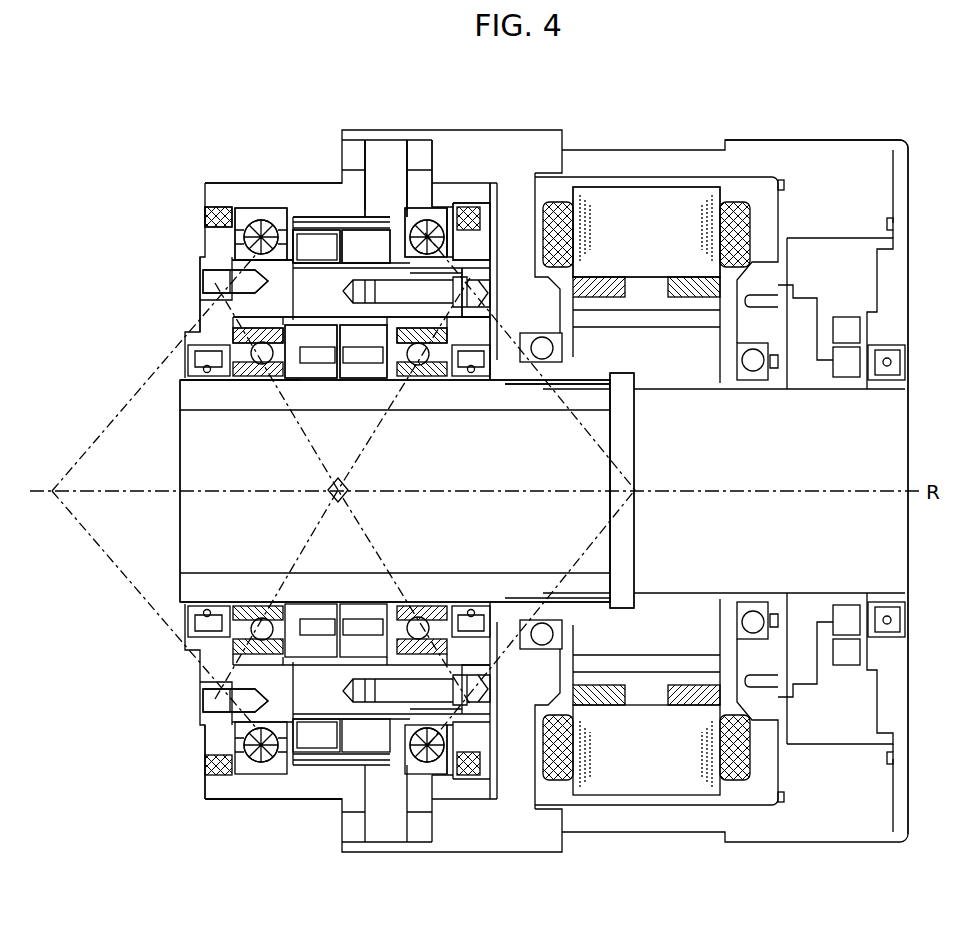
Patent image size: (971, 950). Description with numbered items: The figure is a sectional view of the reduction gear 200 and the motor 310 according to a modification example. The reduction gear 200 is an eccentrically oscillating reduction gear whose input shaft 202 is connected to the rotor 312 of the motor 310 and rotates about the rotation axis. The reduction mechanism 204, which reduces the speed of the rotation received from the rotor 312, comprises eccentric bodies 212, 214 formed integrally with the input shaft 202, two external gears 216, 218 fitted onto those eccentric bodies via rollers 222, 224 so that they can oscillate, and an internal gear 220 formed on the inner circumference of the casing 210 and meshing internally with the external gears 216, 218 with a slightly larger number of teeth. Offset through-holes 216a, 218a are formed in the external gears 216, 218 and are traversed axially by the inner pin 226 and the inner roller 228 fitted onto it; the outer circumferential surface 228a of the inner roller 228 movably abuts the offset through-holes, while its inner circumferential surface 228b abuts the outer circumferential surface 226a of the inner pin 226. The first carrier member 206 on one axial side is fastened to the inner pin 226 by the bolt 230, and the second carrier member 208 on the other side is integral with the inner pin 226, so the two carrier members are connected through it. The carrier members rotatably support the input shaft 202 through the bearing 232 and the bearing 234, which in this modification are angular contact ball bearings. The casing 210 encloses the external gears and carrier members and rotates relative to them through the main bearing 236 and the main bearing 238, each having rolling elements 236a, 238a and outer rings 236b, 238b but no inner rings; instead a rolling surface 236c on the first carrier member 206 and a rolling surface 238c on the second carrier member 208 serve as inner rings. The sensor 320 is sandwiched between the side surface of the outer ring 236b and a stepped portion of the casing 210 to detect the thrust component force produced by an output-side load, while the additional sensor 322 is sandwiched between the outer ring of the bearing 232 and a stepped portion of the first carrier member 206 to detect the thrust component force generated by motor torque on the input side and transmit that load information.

The reduction gear 200 is at (296, 863).
The input shaft 202 is at (245, 412).
The reduction mechanism 204 is at (290, 673).
The first carrier member 206 is at (500, 180).
The second carrier member 208 is at (212, 226).
The casing 210 is at (265, 795).
The eccentric body 212 is at (380, 385).
The eccentric body 214 is at (282, 388).
The external gear 216 is at (360, 740).
The offset through-hole 216a is at (493, 258).
The external gear 218 is at (318, 748).
The offset through-hole 218a is at (313, 318).
The internal gear 220 is at (318, 228).
The roller 222 is at (360, 357).
The roller 224 is at (322, 357).
The inner pin 226 is at (228, 296).
The outer circumferential surface 226a is at (327, 252).
The inner roller 228 is at (432, 316).
The outer circumferential surface 228a is at (352, 240).
The inner circumferential surface 228b is at (360, 245).
The bolt 230 is at (493, 306).
The bearing 232 is at (442, 395).
The bearing 234 is at (236, 393).
The main bearing 236 is at (440, 232).
The rolling element 236a is at (448, 192).
The outer ring 236b is at (410, 215).
The rolling surface 236c is at (500, 258).
The main bearing 238 is at (258, 225).
The rolling element 238a is at (228, 236).
The outer ring 238b is at (268, 191).
The rolling surface 238c is at (245, 264).
The motor 310 is at (712, 860).
The rotor 312 is at (677, 357).
The sensor 320 is at (386, 200).
The sensor 322 is at (522, 392).